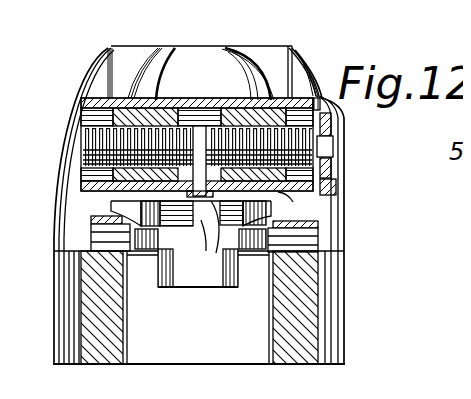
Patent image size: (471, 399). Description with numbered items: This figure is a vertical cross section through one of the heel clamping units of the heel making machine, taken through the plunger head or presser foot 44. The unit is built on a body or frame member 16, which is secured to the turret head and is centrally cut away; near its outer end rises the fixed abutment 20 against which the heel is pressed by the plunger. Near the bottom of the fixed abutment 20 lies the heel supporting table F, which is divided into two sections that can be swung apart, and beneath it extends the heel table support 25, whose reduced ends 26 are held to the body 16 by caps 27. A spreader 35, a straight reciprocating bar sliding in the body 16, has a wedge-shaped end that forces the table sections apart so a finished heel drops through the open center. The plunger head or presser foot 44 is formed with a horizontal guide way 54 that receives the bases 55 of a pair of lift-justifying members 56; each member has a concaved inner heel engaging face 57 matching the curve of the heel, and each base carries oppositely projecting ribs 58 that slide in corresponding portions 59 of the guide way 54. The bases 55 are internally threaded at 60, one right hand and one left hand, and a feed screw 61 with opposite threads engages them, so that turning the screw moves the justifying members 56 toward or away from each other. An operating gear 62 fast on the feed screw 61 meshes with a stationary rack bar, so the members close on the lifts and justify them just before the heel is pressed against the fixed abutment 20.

The body or frame member 16 is at (155, 354).
The fixed abutment 20 is at (143, 48).
The heel table support 25 is at (169, 280).
The reduced ends of heel table support 26 is at (82, 231).
The caps 27 is at (82, 243).
The spreader 35 is at (172, 275).
The plunger head or presser foot 44 is at (304, 79).
The guide way 54 is at (72, 170).
The bases of lift-justifying members 55 is at (120, 84).
The lift-justifying members 56 is at (236, 56).
The concaved inner heel engaging face 57 is at (160, 73).
The ribs or extensions 58 is at (100, 58).
The portions of guide way 59 is at (236, 79).
The internal threads 60 is at (295, 197).
The feed screw 61 is at (326, 138).
The operating gear 62 is at (329, 170).
The heel supporting table F is at (204, 220).